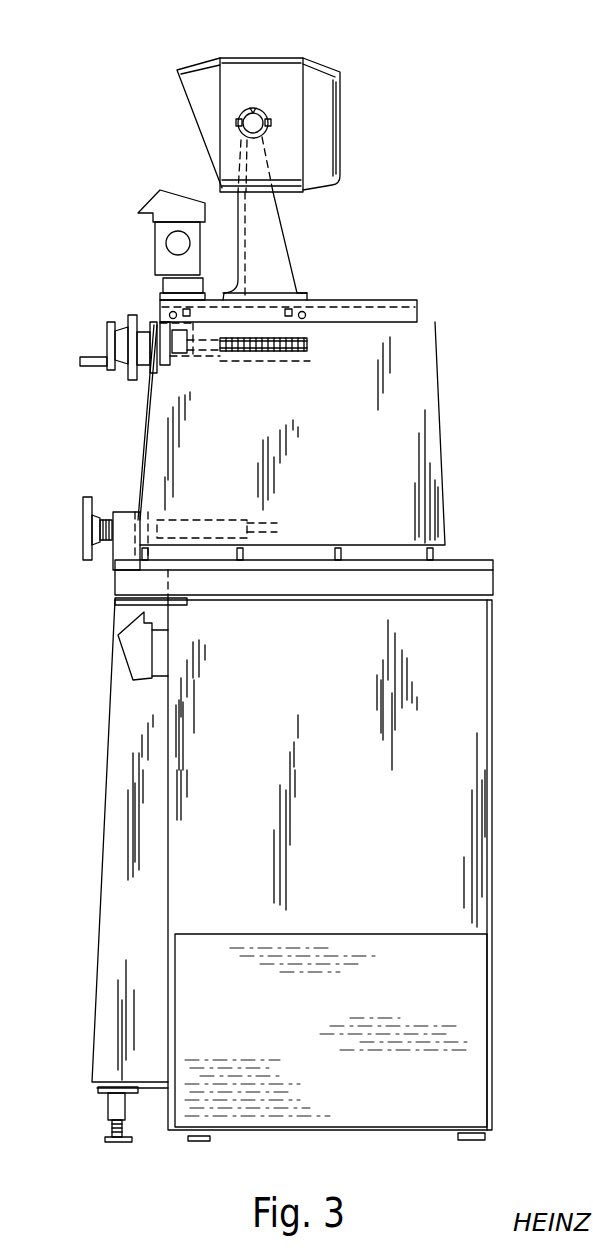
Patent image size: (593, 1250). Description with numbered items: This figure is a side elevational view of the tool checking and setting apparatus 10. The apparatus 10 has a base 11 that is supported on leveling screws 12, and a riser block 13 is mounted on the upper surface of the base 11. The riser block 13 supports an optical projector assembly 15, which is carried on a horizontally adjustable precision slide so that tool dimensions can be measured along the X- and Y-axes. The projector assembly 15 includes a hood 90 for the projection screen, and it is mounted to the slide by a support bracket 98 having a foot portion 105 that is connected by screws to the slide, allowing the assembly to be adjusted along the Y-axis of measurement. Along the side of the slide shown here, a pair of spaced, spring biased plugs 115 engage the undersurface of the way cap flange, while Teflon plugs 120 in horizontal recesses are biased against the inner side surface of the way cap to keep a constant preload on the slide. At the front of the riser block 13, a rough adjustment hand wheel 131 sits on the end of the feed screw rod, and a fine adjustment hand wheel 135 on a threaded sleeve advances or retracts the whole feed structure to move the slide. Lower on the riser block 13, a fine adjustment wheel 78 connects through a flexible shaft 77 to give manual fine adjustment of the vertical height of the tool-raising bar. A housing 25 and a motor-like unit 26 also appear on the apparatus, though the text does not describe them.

The tool checking and setting apparatus 10 is at (433, 291).
The base 11 is at (478, 778).
The leveling screws 12 is at (200, 1141).
The riser block 13 is at (444, 459).
The optical projector assembly 15 is at (303, 53).
The control box 25 is at (126, 659).
The motor 26 is at (146, 194).
The flexible shaft 77 is at (270, 522).
The fine adjustment wheel 78 is at (83, 515).
The hood 90 is at (193, 66).
The support bracket 98 is at (283, 237).
The foot portion 105 is at (222, 288).
The spring biased plugs 115 is at (291, 308).
The plug 120 is at (171, 313).
The rough adjustment hand wheel 131 is at (108, 324).
The fine adjustment hand wheel 135 is at (130, 376).